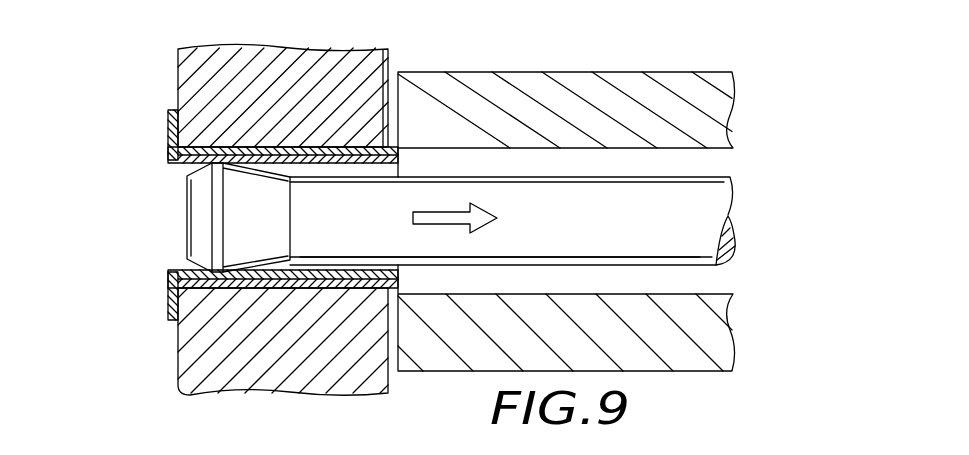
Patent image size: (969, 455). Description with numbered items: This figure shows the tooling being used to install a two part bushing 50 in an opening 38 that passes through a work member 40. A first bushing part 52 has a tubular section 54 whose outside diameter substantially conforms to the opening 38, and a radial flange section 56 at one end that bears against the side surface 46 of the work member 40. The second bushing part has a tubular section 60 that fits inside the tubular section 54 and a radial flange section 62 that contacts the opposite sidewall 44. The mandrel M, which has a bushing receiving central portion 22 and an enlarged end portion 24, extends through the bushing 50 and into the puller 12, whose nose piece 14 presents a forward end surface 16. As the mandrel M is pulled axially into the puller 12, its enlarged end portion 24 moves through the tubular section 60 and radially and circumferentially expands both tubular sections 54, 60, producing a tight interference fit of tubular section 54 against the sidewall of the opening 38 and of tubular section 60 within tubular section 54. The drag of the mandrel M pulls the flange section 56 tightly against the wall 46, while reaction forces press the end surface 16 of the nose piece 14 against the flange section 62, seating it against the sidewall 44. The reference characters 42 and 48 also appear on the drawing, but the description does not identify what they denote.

The puller 12 is at (705, 388).
The nose piece 14 is at (618, 100).
The forward end surface 16 is at (388, 90).
The bushing receiving central portion 22 is at (483, 163).
The enlarged end portion 24 is at (202, 221).
The opening 38 is at (168, 283).
The work member 40 is at (223, 52).
The lower housing 42 is at (270, 446).
The sidewall 44 is at (390, 378).
The side surface 46 is at (176, 360).
The sleeve corner 48 is at (396, 373).
The two part bushing 50 is at (163, 252).
The first bushing part 52 is at (155, 195).
The tubular section 54 is at (168, 176).
The radial flange section 56 is at (168, 139).
The tubular section 60 is at (406, 242).
The radial flange section 62 is at (418, 127).
The mandrel M is at (688, 170).